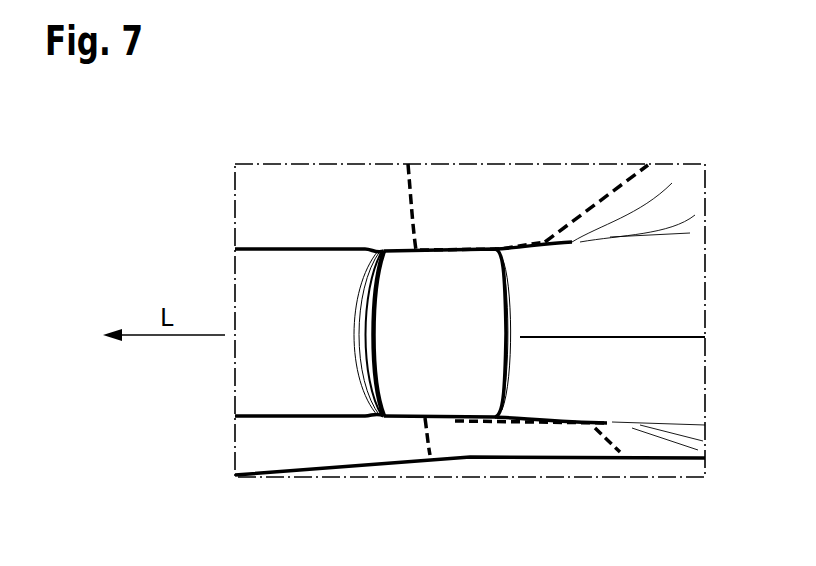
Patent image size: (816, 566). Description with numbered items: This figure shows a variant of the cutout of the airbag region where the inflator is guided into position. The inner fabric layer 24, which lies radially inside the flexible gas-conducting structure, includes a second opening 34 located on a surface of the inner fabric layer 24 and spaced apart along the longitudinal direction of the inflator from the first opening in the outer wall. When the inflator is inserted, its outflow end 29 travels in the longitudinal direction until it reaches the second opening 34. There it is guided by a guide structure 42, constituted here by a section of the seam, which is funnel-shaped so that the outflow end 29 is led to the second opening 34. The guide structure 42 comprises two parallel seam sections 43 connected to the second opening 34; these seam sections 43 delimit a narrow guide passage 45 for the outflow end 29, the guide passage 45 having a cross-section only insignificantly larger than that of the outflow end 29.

The inner fabric layer 24 is at (667, 284).
The outflow end 29 is at (267, 267).
The second opening 34 is at (503, 295).
The guide structure 42 is at (588, 205).
The seam sections 43 is at (506, 243).
The guide passage 45 is at (541, 355).